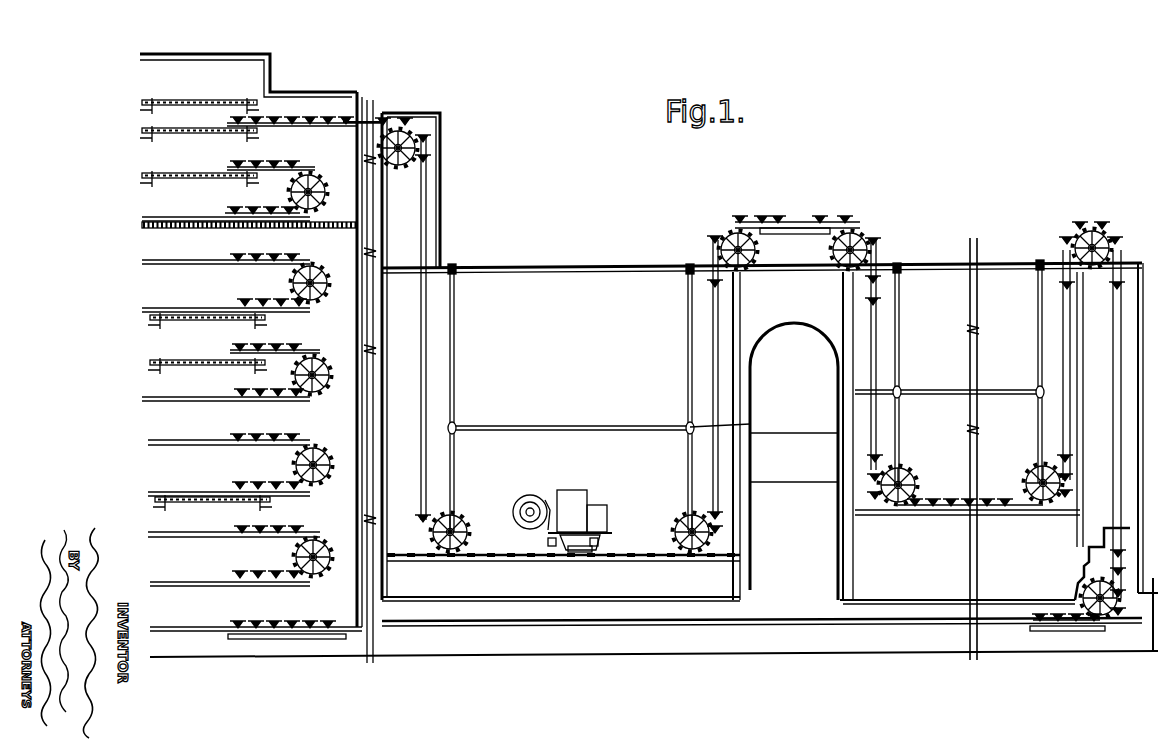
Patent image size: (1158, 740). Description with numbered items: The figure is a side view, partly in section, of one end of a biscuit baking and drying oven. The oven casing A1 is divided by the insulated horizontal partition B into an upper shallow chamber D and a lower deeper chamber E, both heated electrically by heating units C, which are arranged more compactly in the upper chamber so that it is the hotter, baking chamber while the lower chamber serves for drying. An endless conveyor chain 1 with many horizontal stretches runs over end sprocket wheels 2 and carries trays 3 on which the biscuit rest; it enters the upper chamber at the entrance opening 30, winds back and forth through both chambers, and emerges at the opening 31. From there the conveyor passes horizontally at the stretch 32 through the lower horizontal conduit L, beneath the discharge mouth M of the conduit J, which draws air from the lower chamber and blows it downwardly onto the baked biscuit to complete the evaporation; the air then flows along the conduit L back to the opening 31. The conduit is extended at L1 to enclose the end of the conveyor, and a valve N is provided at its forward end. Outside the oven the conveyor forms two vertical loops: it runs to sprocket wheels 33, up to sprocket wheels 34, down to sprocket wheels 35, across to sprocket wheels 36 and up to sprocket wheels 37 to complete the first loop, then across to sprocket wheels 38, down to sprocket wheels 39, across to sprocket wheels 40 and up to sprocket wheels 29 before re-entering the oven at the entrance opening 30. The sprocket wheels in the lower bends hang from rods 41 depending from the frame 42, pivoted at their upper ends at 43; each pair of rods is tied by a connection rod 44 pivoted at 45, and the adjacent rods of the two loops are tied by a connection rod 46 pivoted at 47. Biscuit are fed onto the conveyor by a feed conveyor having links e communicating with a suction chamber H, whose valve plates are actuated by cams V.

The endless conveyor chain 1 is at (238, 167).
The end sprocket wheels 2 is at (290, 194).
The trays 3 is at (300, 168).
The sprocket wheels 29 is at (425, 135).
The entrance opening 30 is at (370, 107).
The exit opening 31 is at (360, 640).
The lower horizontal stretch 32 is at (786, 624).
The sprocket wheels 33 is at (1075, 590).
The sprocket wheels 34 is at (1105, 236).
The sprocket wheels 35 is at (1024, 478).
The sprocket wheels 36 is at (918, 478).
The sprocket wheels 37 is at (870, 240).
The sprocket wheels 38 is at (718, 240).
The sprocket wheels 39 is at (676, 517).
The sprocket wheels 40 is at (462, 518).
The rods 41 is at (455, 357).
The frame 42 is at (645, 266).
The pivotal connection 43 is at (453, 275).
The connection rod 44 is at (560, 426).
The pivotal connection 45 is at (457, 426).
The connection rod 46 is at (741, 424).
The pivotal connection 47 is at (692, 433).
The oven casing A1 is at (273, 75).
The horizontal partition B is at (140, 226).
The heating units C is at (152, 126).
The upper chamber D is at (150, 155).
The lower chamber E is at (153, 248).
The suction chamber H is at (574, 496).
The cams V is at (530, 495).
The links e is at (580, 552).
The conduit J is at (797, 324).
The discharge mouth M is at (790, 538).
The lower horizontal conduit L is at (632, 656).
The conduit extension L1 is at (948, 650).
The valve N is at (1152, 635).